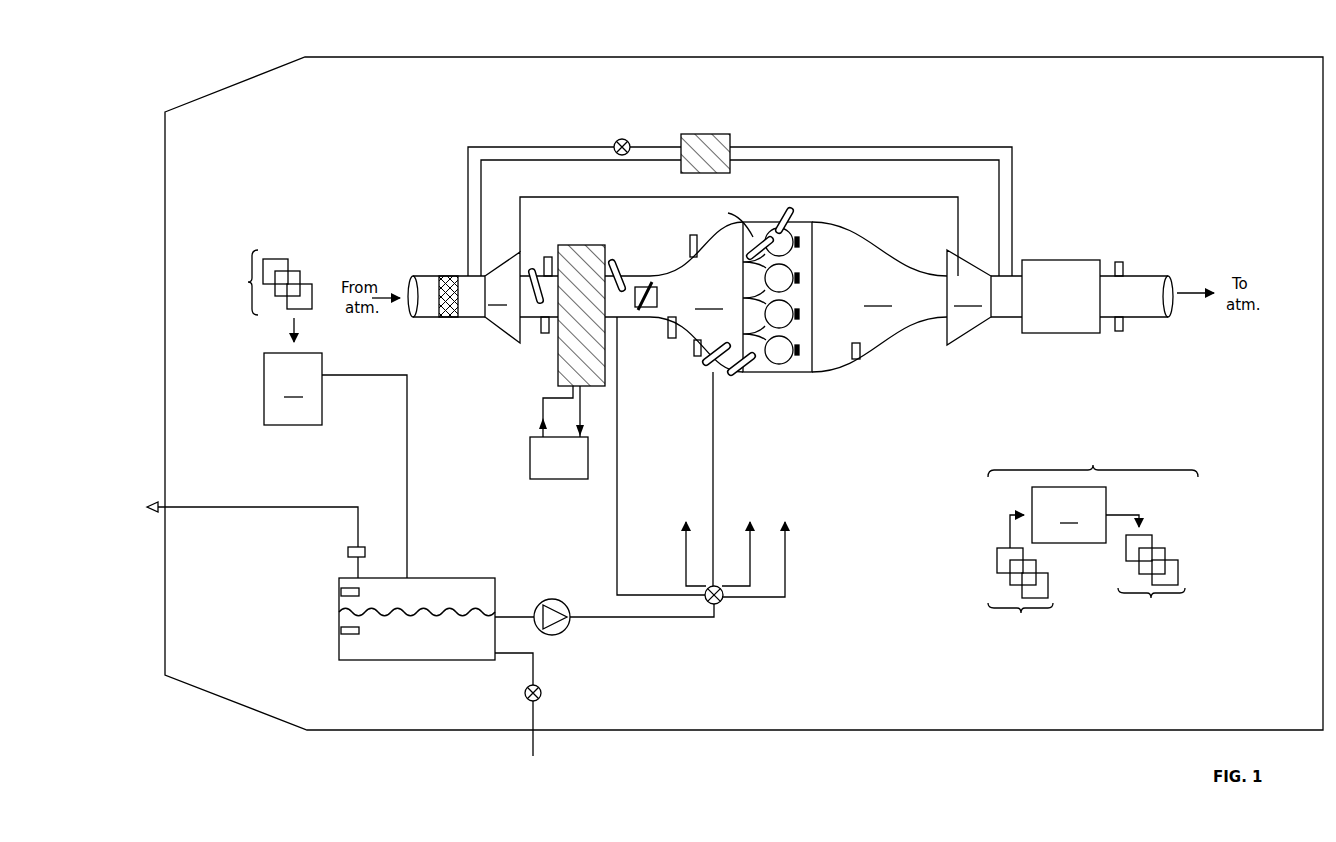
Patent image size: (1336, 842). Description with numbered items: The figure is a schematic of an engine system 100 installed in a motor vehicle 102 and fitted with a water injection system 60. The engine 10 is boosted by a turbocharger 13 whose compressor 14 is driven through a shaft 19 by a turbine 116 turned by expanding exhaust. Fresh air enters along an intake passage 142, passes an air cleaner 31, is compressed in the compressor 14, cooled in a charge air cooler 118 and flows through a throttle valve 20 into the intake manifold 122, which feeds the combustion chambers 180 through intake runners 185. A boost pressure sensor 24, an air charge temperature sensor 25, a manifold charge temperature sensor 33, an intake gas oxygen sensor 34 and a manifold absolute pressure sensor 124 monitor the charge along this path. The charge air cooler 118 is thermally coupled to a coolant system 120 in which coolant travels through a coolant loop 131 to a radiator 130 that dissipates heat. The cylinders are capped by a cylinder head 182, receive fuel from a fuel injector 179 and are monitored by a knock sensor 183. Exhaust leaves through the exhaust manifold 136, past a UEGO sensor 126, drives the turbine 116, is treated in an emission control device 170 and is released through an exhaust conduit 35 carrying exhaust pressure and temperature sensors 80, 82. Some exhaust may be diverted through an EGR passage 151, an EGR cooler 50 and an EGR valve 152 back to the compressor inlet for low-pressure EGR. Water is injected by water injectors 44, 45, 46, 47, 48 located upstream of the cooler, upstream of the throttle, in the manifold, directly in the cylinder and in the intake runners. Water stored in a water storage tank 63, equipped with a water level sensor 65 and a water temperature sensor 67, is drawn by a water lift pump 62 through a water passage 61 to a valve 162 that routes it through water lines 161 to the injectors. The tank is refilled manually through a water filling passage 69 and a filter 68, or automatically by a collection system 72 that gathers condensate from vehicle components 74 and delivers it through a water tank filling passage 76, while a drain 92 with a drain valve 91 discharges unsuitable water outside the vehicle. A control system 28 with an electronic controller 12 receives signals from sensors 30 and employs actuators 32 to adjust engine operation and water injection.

The engine 10 is at (765, 252).
The controller 12 is at (1069, 515).
The turbocharger 13 is at (550, 187).
The compressor 14 is at (502, 297).
The shaft 19 is at (885, 198).
The throttle valve 20 is at (657, 296).
The boost pressure sensor 24 is at (547, 333).
The air charge temperature sensor 25 is at (548, 257).
The control system 28 is at (1091, 537).
The sensors 30 is at (1021, 586).
The air cleaner 31 is at (447, 276).
The actuators 32 is at (1151, 578).
The manifold charge temperature sensor 33 is at (690, 246).
The intake gas oxygen sensor 34 is at (668, 328).
The exhaust conduit 35 is at (1156, 276).
The water injector 44 is at (533, 272).
The water injector 45 is at (615, 269).
The water injector 46 is at (712, 362).
The water injector 47 is at (749, 258).
The water injector 48 is at (738, 368).
The EGR cooler 50 is at (716, 134).
The water injection system 60 is at (576, 536).
The water passage 61 is at (660, 617).
The water lift pump 62 is at (568, 604).
The water storage tank 63 is at (474, 578).
The water level sensor 65 is at (341, 594).
The water temperature sensor 67 is at (341, 632).
The filter 68 is at (366, 552).
The water filling passage 69 is at (282, 507).
The collection system 72 is at (293, 389).
The vehicle components 74 is at (248, 282).
The water tank filling passage 76 is at (407, 440).
The exhaust pressure and temperature sensor 80 is at (1120, 262).
The exhaust pressure and temperature sensor 82 is at (1120, 331).
The drain valve 91 is at (540, 688).
The drain 92 is at (534, 660).
The engine system 100 is at (1092, 104).
The motor vehicle 102 is at (746, 57).
The turbine 116 is at (969, 297).
The charge air cooler 118 is at (578, 245).
The coolant system 120 is at (546, 441).
The intake manifold 122 is at (674, 297).
The manifold absolute pressure sensor 124 is at (694, 348).
The UEGO sensor 126 is at (861, 350).
The radiator 130 is at (516, 459).
The coolant loop 131 is at (542, 404).
The exhaust manifold 136 is at (879, 297).
The intake passage 142 is at (422, 317).
The EGR passage 151 is at (806, 147).
The EGR valve 152 is at (628, 141).
The water lines 161 is at (618, 487).
The valve 162 is at (720, 603).
The emission control device 170 is at (1050, 260).
The fuel injector 179 is at (791, 210).
The combustion chambers 180 is at (795, 234).
The cylinder head 182 is at (812, 298).
The knock sensor 183 is at (800, 352).
The intake runners 185 is at (726, 220).